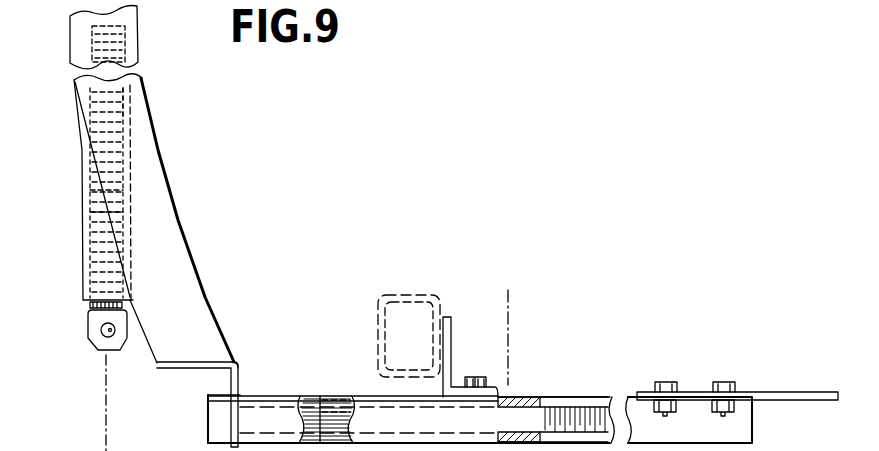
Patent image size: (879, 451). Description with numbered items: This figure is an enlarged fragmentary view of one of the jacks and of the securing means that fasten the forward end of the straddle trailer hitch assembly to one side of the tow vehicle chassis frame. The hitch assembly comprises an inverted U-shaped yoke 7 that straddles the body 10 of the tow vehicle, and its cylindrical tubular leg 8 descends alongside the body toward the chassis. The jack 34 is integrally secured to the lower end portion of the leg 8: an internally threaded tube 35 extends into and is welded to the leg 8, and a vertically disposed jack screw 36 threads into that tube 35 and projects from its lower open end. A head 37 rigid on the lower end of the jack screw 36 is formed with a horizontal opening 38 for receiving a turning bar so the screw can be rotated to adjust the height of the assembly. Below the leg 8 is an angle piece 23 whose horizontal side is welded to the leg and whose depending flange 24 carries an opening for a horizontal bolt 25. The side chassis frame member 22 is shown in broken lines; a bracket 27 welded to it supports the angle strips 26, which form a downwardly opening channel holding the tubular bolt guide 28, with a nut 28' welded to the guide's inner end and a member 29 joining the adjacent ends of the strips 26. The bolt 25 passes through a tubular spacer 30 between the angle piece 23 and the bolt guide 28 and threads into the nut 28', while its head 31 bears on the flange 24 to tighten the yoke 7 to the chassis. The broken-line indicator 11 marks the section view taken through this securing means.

The yoke 7 is at (194, 240).
The leg 8 is at (168, 212).
The body 10 is at (98, 272).
The section line 11 is at (491, 297).
The side frame member 22 is at (384, 294).
The angle piece 23 is at (253, 368).
The depending flange 24 is at (237, 388).
The bolt 25 is at (277, 405).
The angle strip 26 is at (428, 430).
The bracket 27 is at (450, 355).
The tubular bolt guide 28 is at (371, 395).
The nut 28' is at (553, 402).
The connecting member 29 is at (797, 400).
The tubular spacer 30 is at (268, 402).
The bolt head 31 is at (218, 421).
The jack 34 is at (134, 203).
The internally threaded tube 35 is at (130, 163).
The jack screw 36 is at (150, 110).
The head 37 is at (120, 339).
The opening 38 is at (112, 330).